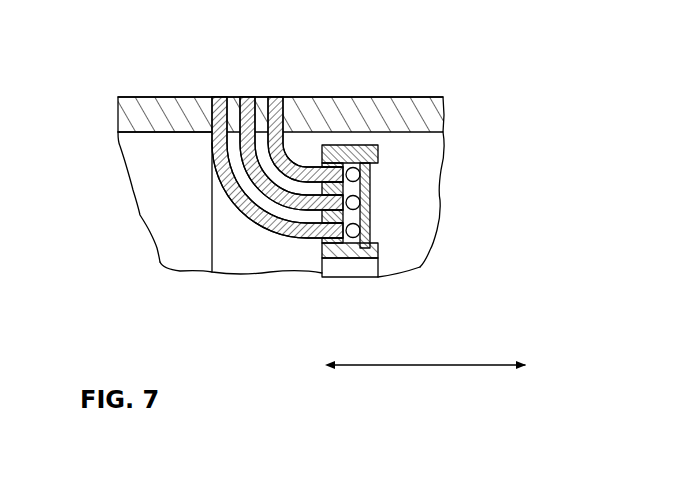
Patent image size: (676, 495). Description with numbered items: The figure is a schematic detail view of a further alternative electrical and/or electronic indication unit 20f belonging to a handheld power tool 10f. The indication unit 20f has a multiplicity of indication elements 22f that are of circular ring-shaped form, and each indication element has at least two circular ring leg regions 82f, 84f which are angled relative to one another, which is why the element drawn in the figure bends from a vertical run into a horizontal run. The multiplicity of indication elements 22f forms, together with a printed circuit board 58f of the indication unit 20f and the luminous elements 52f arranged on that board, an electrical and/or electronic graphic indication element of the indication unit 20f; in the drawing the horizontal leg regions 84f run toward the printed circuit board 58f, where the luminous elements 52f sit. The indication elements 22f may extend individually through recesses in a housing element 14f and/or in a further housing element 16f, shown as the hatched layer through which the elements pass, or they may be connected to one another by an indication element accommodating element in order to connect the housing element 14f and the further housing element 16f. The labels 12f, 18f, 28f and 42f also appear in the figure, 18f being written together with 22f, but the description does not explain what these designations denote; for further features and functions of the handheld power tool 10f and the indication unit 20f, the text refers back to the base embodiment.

The handheld power tool 10f is at (94, 86).
The substrate assembly 12f is at (488, 127).
The housing element 14f is at (407, 108).
The further housing element 16f is at (152, 102).
The electrical conductor 18f is at (270, 137).
The indication elements 22f is at (216, 100).
The top surface 28f is at (345, 101).
The electrical and/or electronic indication unit 20f is at (184, 311).
The lateral dimension 42f is at (473, 363).
The luminous elements 52f is at (404, 211).
The printed circuit board 58f is at (371, 192).
The circular ring leg region 82f is at (183, 156).
The circular ring leg region 84f is at (266, 245).